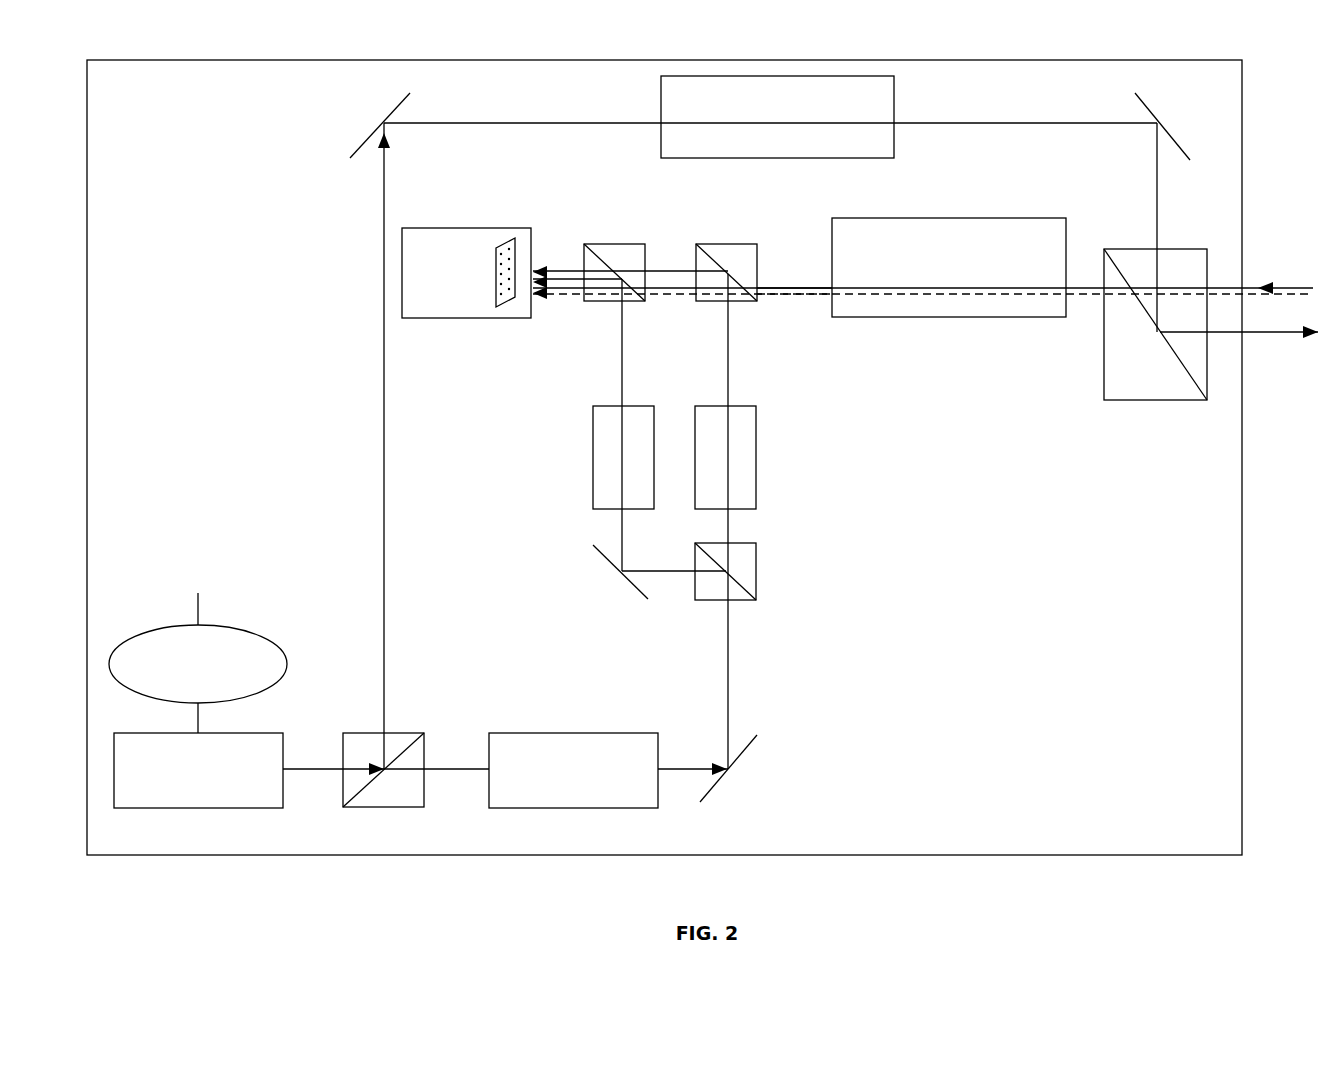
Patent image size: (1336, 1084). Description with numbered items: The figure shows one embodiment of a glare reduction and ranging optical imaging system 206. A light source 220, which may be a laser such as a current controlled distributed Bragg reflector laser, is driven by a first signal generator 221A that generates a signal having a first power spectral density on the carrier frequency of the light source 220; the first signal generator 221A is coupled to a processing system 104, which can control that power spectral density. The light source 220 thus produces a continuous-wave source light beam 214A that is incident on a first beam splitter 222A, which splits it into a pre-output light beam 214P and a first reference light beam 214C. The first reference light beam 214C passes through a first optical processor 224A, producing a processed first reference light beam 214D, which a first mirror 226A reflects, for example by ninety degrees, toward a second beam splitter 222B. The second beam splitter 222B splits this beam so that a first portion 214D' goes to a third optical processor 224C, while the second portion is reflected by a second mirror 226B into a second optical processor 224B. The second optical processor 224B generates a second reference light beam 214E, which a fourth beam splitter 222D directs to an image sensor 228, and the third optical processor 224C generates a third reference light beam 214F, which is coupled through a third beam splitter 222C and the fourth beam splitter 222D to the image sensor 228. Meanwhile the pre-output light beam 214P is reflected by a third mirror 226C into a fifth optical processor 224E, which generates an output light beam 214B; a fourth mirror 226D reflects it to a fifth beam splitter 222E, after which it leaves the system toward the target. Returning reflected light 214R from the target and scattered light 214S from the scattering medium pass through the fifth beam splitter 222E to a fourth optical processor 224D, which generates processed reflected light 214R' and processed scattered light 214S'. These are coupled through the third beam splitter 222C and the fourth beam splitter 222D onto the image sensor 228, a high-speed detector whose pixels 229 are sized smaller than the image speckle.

The glare reduction and ranging optical imaging system 206 is at (664, 457).
The third mirror 226C is at (360, 167).
The pre-output light beam 214P is at (494, 433).
The fifth optical processor 224E is at (777, 117).
The output light beam 214B is at (1106, 231).
The fourth mirror 226D is at (1184, 112).
The fifth beam splitter 222E is at (1155, 358).
The reflected light 214R is at (923, 279).
The scattered light 214S is at (923, 307).
The processed reflected light 214R' is at (794, 275).
The processed scattered light 214S' is at (794, 308).
The fourth optical processor 224D is at (949, 267).
The fourth beam splitter 222D is at (618, 247).
The third beam splitter 222C is at (725, 247).
The image sensor 228 is at (466, 273).
The pixels 229 is at (507, 300).
The second reference light beam 214E is at (577, 423).
The third reference light beam 214F is at (658, 420).
The second optical processor 224B is at (572, 457).
The third optical processor 224C is at (777, 457).
The first portion of the processed first reference light beam 214D' is at (758, 642).
The second beam splitter 222B is at (773, 571).
The second mirror 226B is at (601, 597).
The processing system 104 is at (197, 580).
The first signal generator 221A is at (198, 679).
The light source 220 is at (198, 770).
The source light beam 214A is at (333, 760).
The first beam splitter 222A is at (384, 784).
The first reference light beam 214C is at (436, 757).
The first optical processor 224A is at (573, 770).
The processed first reference light beam 214D is at (693, 760).
The first mirror 226A is at (747, 783).